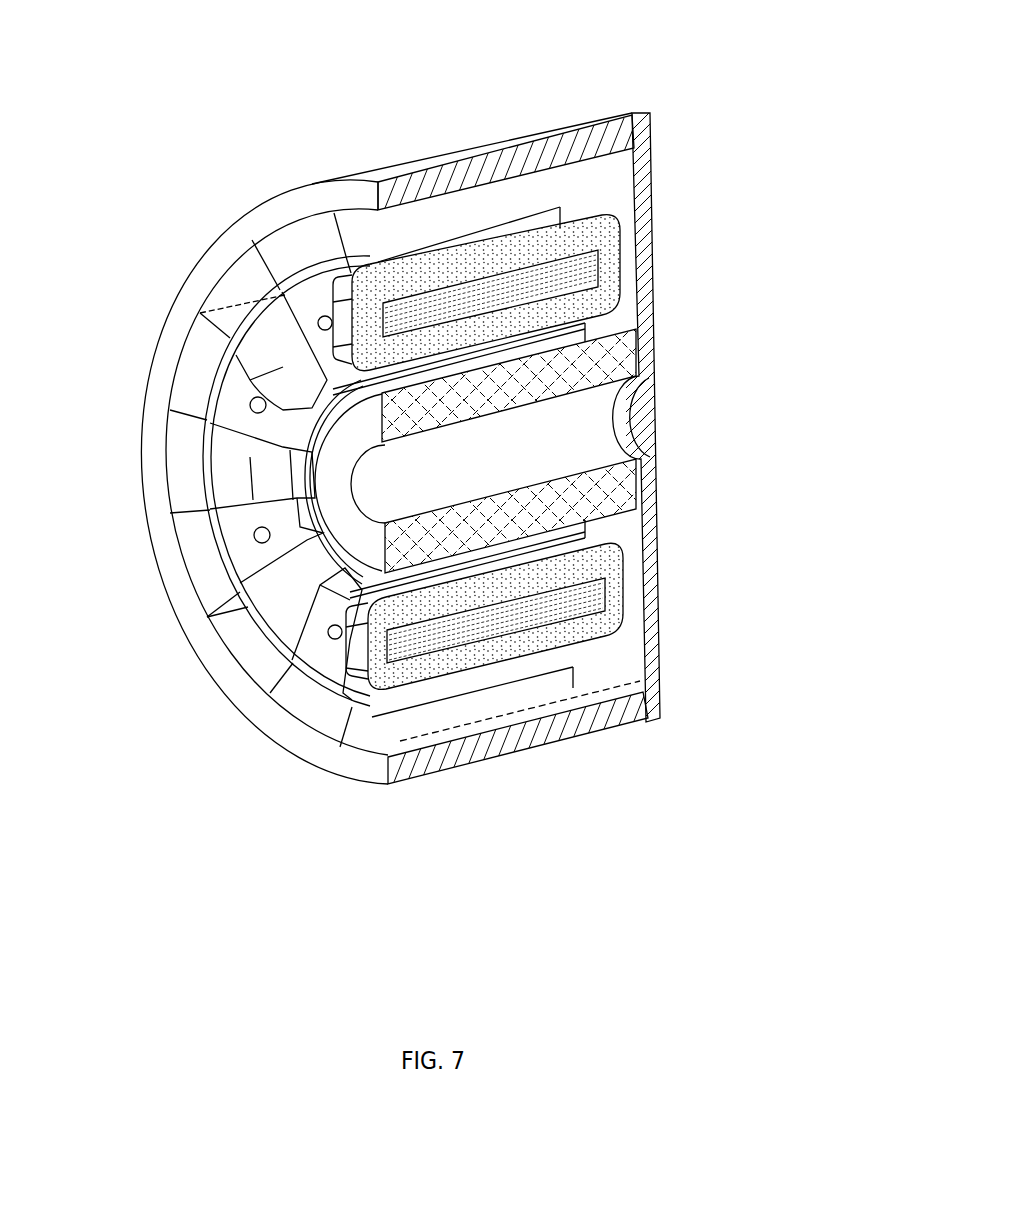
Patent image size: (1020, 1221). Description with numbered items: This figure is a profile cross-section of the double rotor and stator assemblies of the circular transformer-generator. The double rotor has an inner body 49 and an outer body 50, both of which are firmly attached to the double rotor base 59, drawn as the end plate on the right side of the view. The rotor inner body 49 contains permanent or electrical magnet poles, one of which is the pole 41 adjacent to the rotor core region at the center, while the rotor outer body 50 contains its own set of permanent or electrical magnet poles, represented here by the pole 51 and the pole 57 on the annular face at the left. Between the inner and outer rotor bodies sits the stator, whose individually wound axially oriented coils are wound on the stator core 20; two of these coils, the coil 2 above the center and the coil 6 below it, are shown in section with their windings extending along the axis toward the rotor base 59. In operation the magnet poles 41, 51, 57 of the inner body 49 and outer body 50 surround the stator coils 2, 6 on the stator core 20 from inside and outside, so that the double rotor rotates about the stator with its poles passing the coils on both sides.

The individually wound axially stator coil 2 is at (600, 294).
The individually wound axially stator coil 6 is at (574, 570).
The stator core 20 is at (587, 600).
The magnet pole of the rotor inner body 41 is at (353, 392).
The rotor inner body 49 is at (567, 370).
The rotor outer body 50 is at (545, 140).
The magnet pole of the rotor outer body 51 is at (303, 247).
The magnet pole of the rotor outer body 57 is at (203, 563).
The double rotor base 59 is at (651, 212).